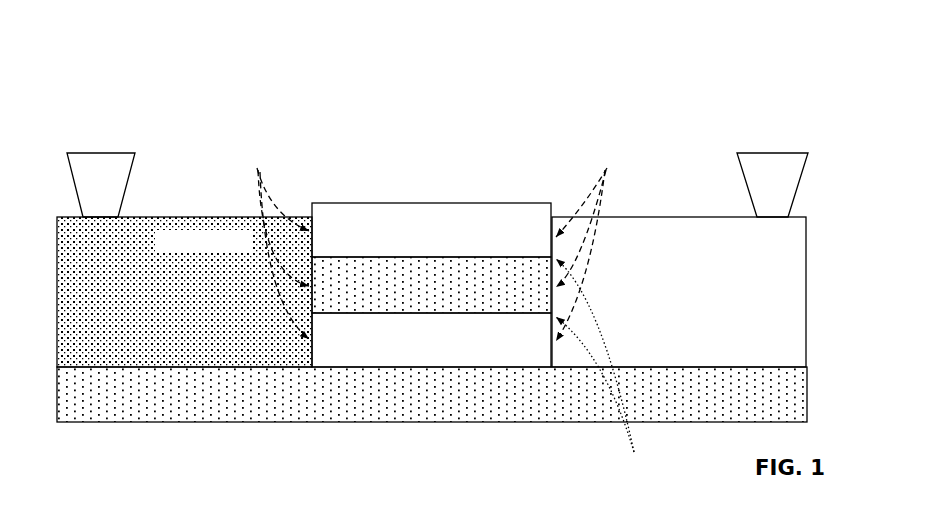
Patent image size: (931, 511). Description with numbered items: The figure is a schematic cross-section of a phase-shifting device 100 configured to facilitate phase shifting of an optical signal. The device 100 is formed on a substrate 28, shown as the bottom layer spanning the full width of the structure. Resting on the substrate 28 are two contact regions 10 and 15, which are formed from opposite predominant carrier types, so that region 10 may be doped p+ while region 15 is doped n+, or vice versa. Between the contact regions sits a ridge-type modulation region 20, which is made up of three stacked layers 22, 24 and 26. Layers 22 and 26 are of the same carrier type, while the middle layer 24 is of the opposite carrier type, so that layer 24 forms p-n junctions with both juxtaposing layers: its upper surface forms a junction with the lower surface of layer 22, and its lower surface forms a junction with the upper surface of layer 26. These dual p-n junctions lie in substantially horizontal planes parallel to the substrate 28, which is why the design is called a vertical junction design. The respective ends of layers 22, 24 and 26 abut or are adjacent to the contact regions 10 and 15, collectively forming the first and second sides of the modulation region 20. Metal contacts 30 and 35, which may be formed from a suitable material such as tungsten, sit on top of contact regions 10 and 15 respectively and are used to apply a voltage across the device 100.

The phase-shifting device 100 is at (157, 78).
The contact region 10 is at (184, 292).
The contact region 15 is at (679, 292).
The ridge-type modulation region 20 is at (420, 165).
The layer 22 is at (431, 230).
The layer 24 is at (431, 285).
The layer 26 is at (431, 340).
The substrate 28 is at (432, 394).
The metal contact 30 is at (101, 185).
The metal contact 35 is at (772, 185).